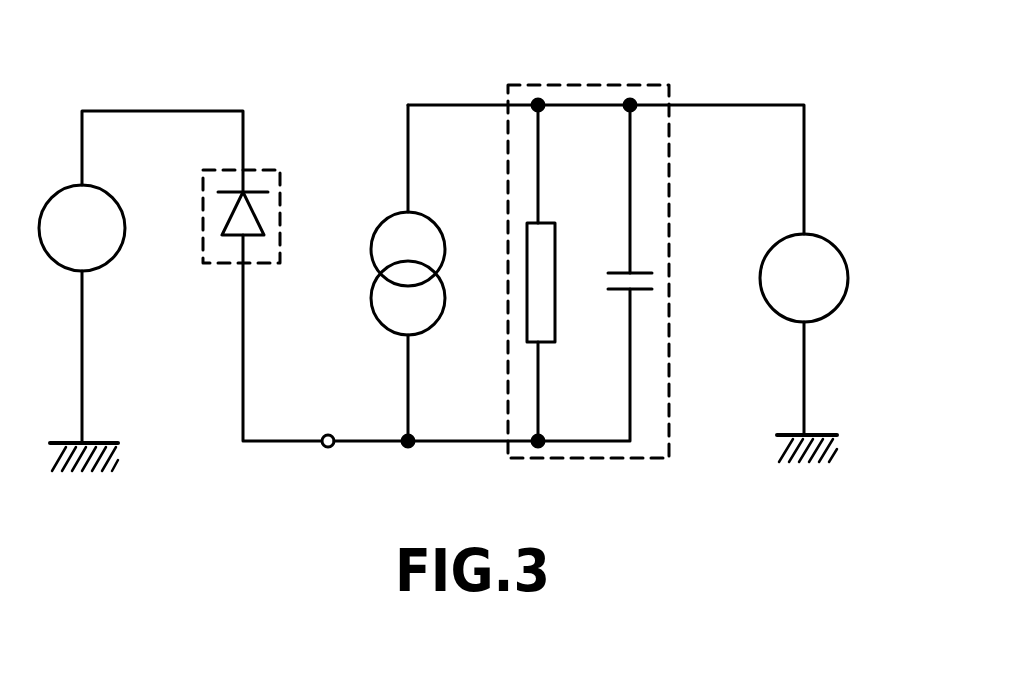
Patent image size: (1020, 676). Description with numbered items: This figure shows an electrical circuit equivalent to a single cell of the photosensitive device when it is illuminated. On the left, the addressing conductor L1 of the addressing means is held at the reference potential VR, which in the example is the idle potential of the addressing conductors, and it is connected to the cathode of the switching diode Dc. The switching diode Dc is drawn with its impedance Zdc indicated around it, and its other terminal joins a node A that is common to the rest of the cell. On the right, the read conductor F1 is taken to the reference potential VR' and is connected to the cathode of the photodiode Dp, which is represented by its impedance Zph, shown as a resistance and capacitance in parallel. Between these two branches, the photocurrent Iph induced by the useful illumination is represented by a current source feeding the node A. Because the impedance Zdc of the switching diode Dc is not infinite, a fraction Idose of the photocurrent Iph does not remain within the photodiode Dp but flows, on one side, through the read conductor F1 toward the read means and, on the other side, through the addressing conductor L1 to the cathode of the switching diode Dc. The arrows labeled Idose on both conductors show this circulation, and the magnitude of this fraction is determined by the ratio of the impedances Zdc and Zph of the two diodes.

The addressing conductor L1 is at (127, 110).
The photocurrent fraction Idose is at (238, 88).
The reference potential VR is at (82, 328).
The switching diode Dc is at (245, 217).
The impedance of the switching diode Zdc is at (306, 226).
The node A is at (429, 459).
The photocurrent Iph is at (388, 276).
The read conductor F1 is at (718, 104).
The photodiode Dp is at (497, 403).
The impedance of the photodiode Zph is at (589, 459).
The reference potential VR' is at (804, 348).